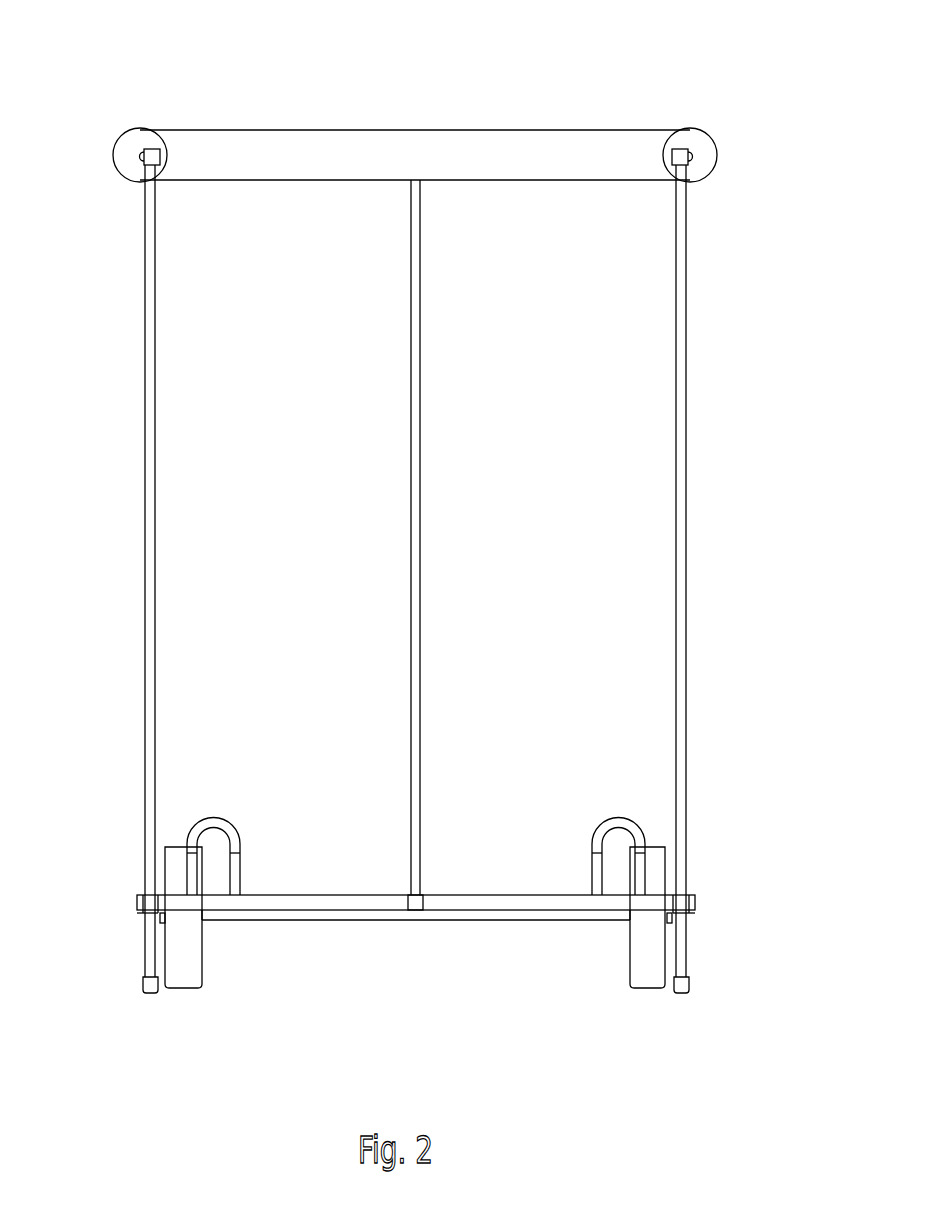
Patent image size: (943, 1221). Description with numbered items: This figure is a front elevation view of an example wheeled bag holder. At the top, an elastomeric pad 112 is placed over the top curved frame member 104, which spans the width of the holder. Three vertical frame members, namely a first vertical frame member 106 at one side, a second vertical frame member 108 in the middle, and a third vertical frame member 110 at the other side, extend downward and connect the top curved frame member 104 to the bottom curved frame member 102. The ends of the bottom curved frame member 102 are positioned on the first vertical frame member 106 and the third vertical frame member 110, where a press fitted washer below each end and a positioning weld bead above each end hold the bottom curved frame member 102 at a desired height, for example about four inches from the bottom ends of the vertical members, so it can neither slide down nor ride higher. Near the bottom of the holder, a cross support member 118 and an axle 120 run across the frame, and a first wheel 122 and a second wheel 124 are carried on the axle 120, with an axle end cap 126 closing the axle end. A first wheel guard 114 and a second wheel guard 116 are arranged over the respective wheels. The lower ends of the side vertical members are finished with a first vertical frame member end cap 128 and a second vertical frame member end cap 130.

The bottom curved frame member 102 is at (695, 902).
The top curved frame member 104 is at (147, 155).
The first vertical frame member 106 is at (147, 443).
The second vertical frame member 108 is at (413, 455).
The third vertical frame member 110 is at (690, 455).
The elastomeric pad 112 is at (460, 150).
The first wheel guard 114 is at (222, 820).
The second wheel guard 116 is at (602, 822).
The cross support member 118 is at (350, 912).
The axle 120 is at (400, 920).
The first wheel 122 is at (188, 980).
The second wheel 124 is at (655, 975).
The axle end cap 126 is at (682, 157).
The first vertical frame member end cap 128 is at (143, 990).
The second vertical frame member end cap 130 is at (688, 992).